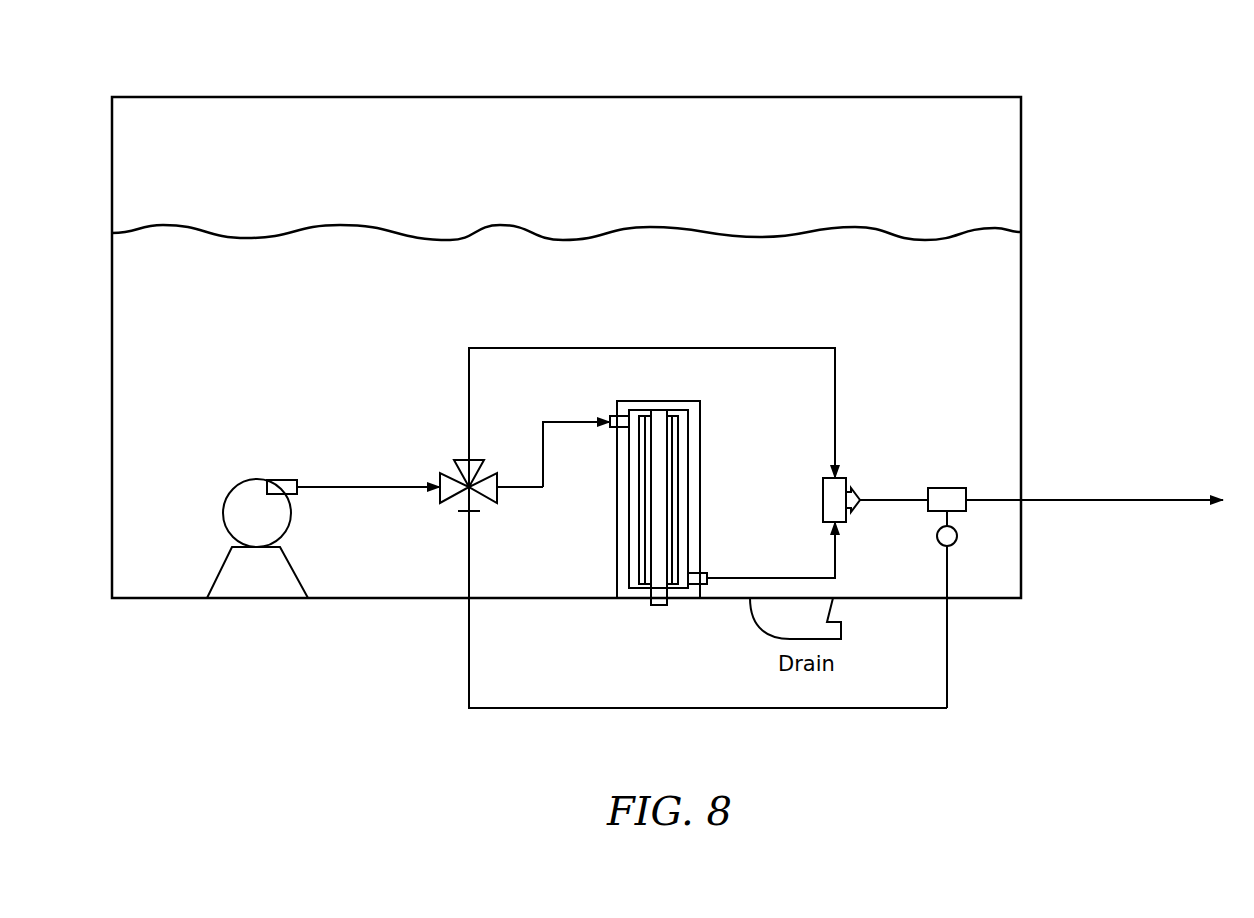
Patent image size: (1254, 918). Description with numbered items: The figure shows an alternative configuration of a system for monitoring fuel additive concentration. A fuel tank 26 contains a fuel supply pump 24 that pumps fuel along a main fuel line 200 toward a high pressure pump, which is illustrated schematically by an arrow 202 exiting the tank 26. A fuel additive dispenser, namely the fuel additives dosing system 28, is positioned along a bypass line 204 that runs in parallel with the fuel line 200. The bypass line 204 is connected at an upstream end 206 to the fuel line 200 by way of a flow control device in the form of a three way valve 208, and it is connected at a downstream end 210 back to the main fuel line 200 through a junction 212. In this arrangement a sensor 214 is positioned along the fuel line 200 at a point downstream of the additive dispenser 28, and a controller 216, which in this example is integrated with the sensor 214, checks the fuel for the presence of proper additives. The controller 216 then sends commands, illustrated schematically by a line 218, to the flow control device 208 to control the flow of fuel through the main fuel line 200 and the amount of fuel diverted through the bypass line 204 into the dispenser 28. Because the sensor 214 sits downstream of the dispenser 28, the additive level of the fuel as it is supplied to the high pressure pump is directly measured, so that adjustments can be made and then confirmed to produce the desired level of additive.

The fuel tank 26 is at (1043, 195).
The fuel supply pump 24 is at (238, 566).
The fuel line 200 is at (521, 347).
The bypass line 204 is at (565, 421).
The upstream end 206 is at (517, 485).
The three way valve 208 is at (450, 471).
The fuel additives dosing system 28 is at (693, 438).
The downstream end 210 is at (833, 560).
The junction 212 is at (847, 479).
The arrow to high pressure pump 202 is at (1108, 500).
The sensor 214 is at (960, 510).
The controller 216 is at (960, 510).
The command line 218 is at (866, 709).